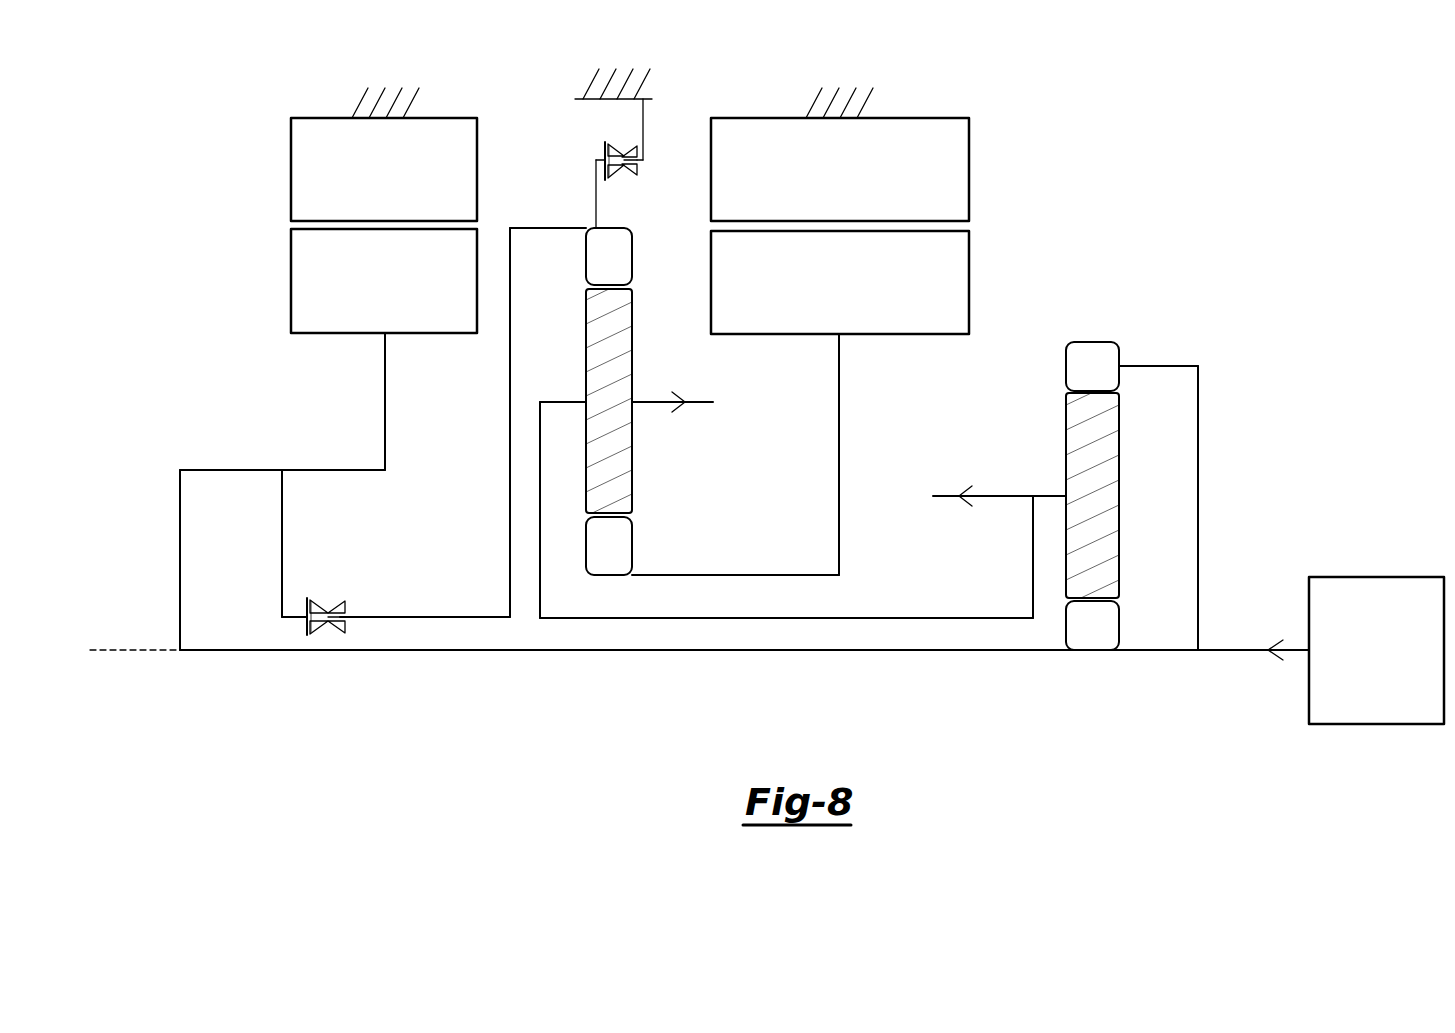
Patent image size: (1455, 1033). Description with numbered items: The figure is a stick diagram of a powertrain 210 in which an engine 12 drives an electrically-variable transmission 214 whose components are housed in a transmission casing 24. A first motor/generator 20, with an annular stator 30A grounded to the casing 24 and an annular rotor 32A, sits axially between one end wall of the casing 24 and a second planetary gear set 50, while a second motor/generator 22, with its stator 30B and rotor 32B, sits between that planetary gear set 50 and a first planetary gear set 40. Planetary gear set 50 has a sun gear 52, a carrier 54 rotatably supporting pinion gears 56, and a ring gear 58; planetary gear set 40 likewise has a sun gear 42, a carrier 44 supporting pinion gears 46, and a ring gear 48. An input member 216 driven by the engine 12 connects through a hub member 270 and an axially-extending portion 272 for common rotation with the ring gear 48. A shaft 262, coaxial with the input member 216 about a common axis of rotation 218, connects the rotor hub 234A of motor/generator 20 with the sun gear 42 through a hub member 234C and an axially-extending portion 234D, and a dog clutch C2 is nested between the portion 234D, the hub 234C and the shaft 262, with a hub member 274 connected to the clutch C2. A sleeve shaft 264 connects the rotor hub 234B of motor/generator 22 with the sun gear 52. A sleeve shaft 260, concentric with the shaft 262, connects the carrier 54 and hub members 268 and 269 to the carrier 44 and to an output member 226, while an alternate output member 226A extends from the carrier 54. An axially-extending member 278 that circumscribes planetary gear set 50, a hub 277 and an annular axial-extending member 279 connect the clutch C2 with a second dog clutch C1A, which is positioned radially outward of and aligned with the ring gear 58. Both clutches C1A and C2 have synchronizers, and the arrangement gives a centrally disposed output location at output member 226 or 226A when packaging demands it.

The powertrain 210 is at (1012, 120).
The electrically-variable transmission 214 is at (284, 88).
The first motor/generator 20 is at (265, 237).
The second motor/generator 22 is at (980, 228).
The transmission casing 24 is at (368, 114).
The stator 30A is at (403, 184).
The rotor 32A is at (403, 312).
The stator 30B is at (858, 184).
The rotor 32B is at (858, 312).
The clutch C1A is at (658, 122).
The clutch C2 is at (322, 582).
The axially-extending member 278 is at (552, 228).
The ring gear 58 is at (632, 258).
The pinion gears 56 is at (632, 332).
The carrier 54 is at (565, 402).
The sun gear 52 is at (632, 545).
The second planetary gear set 50 is at (650, 458).
The hub 277 is at (510, 379).
The hub member 268 is at (540, 462).
The alternate output member 226A is at (656, 402).
The sleeve shaft 264 is at (800, 575).
The sleeve shaft 260 is at (897, 618).
The shaft 262 is at (636, 650).
The axial-extending member 279 is at (473, 617).
The hub member 274 is at (282, 573).
The rotor hub 234A is at (385, 400).
The rotor hub 234B is at (839, 388).
The hub member 234C is at (180, 526).
The axially-extending portion 234D is at (205, 470).
The common axis of rotation 218 is at (140, 652).
The ring gear 48 is at (1093, 342).
The pinion gears 46 is at (1119, 470).
The carrier 44 is at (1045, 496).
The sun gear 42 is at (1119, 625).
The first planetary gear set 40 is at (1126, 510).
The output member 226 is at (1000, 496).
The hub member 269 is at (1033, 538).
The axially-extending portion 272 is at (1160, 366).
The hub member 270 is at (1198, 498).
The input member 216 is at (1234, 652).
The engine 12 is at (1395, 682).